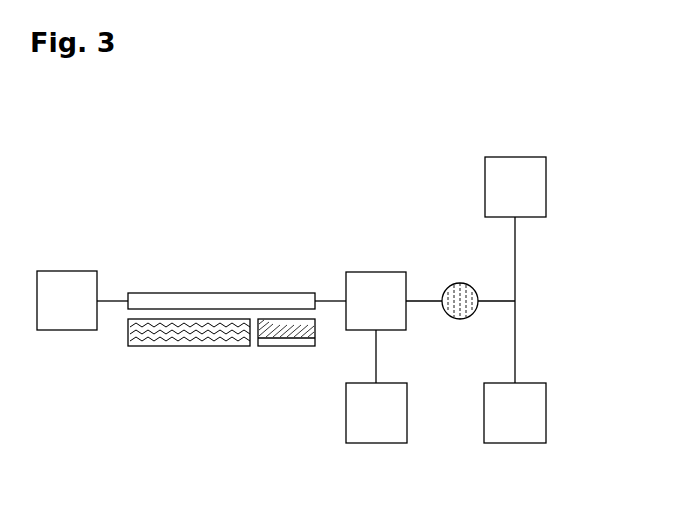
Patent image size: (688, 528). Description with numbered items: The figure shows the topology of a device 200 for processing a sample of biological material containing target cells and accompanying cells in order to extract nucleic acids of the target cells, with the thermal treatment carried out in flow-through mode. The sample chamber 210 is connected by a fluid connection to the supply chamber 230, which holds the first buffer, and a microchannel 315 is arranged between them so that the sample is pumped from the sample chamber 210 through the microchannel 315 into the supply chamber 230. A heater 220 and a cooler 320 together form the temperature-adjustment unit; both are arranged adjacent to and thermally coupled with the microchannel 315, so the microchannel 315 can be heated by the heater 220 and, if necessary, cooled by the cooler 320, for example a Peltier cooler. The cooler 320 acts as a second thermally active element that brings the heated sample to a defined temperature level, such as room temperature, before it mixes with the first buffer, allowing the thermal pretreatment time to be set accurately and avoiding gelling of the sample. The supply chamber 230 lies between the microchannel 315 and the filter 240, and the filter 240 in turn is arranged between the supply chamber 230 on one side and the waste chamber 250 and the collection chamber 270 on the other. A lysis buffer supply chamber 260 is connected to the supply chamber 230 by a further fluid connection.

The device 200 is at (556, 135).
The sample chamber 210 is at (68, 312).
The heater 220 is at (193, 341).
The supply chamber 230 is at (370, 284).
The filter 240 is at (452, 292).
The waste chamber 250 is at (513, 173).
The lysis buffer supply chamber 260 is at (377, 428).
The collection chamber 270 is at (514, 428).
The microchannel 315 is at (195, 302).
The cooler 320 is at (283, 336).